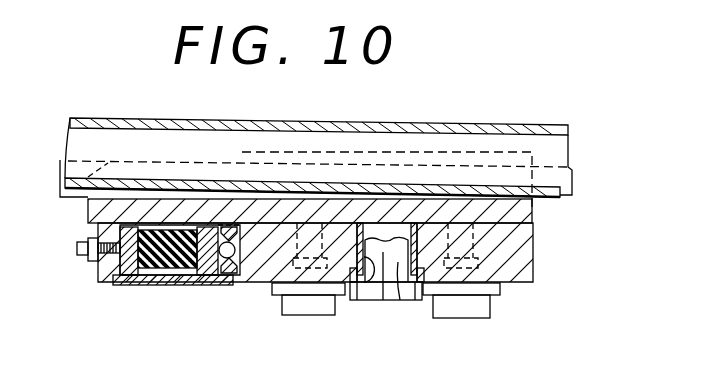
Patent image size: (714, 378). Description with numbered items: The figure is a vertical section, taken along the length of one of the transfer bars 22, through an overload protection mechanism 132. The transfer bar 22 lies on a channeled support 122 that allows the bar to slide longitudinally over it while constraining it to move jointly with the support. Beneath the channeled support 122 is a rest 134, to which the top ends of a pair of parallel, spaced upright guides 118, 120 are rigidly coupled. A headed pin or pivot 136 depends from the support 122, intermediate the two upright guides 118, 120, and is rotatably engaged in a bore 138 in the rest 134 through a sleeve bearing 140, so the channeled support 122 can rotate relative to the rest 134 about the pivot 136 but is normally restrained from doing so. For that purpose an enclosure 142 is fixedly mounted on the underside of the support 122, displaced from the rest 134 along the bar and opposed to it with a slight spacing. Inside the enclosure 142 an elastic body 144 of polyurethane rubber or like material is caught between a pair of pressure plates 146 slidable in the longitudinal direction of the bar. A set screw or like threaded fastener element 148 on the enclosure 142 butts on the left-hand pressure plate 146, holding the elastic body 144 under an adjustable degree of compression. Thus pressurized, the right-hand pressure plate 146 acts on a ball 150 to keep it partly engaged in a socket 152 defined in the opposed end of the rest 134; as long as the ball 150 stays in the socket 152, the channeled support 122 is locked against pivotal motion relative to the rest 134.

The transfer bar 22 is at (296, 127).
The upright guide 118 is at (322, 317).
The upright guide 120 is at (490, 318).
The channeled support 122 is at (532, 215).
The overload protection mechanism 132 is at (305, 248).
The rest 134 is at (532, 265).
The pivot 136 is at (393, 303).
The bore 138 is at (353, 298).
The sleeve bearing 140 is at (413, 300).
The enclosure 142 is at (183, 285).
The elastic body 144 is at (168, 262).
The pressure plate 146 is at (133, 288).
The threaded fastener element 148 is at (82, 242).
The ball 150 is at (240, 283).
The socket 152 is at (228, 224).